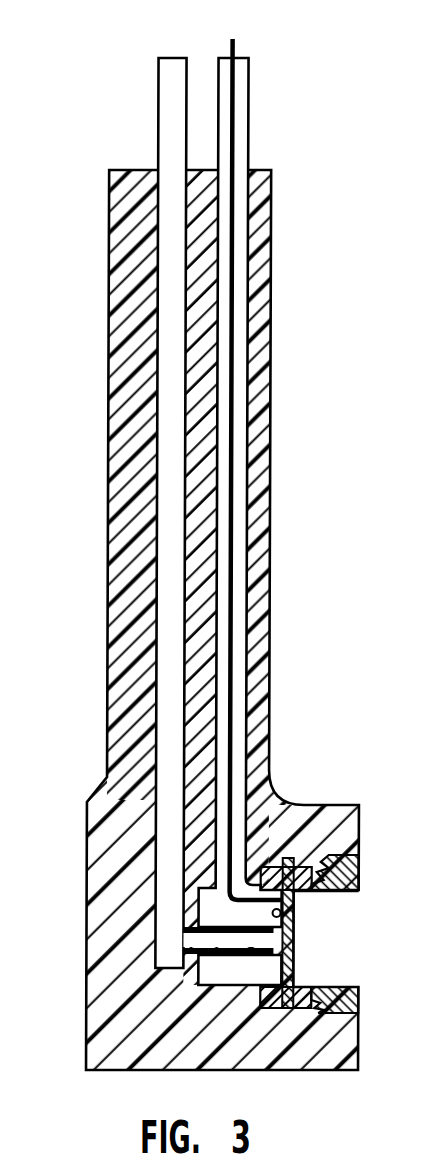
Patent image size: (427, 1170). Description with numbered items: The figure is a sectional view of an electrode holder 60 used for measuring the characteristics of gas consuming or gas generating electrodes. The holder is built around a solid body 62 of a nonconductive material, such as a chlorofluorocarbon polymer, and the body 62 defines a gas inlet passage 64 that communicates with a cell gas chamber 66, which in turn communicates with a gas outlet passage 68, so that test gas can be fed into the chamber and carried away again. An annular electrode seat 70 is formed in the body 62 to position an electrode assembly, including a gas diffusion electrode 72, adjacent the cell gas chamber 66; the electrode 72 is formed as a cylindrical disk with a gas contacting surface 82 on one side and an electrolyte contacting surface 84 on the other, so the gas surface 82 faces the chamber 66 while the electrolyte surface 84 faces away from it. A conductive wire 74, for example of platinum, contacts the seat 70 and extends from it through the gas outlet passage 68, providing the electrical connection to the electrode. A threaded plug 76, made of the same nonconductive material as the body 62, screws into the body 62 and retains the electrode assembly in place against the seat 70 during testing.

The electrode holder 60 is at (212, 541).
The solid body 62 is at (115, 702).
The gas inlet passage 64 is at (168, 250).
The cell gas chamber 66 is at (267, 968).
The gas outlet passage 68 is at (240, 128).
The annular electrode seat 70 is at (307, 892).
The gas diffusion electrode 72 is at (290, 865).
The conductive wire 74 is at (235, 77).
The threaded plug 76 is at (358, 860).
The gas contacting surface 82 is at (297, 920).
The electrolyte contacting surface 84 is at (297, 938).